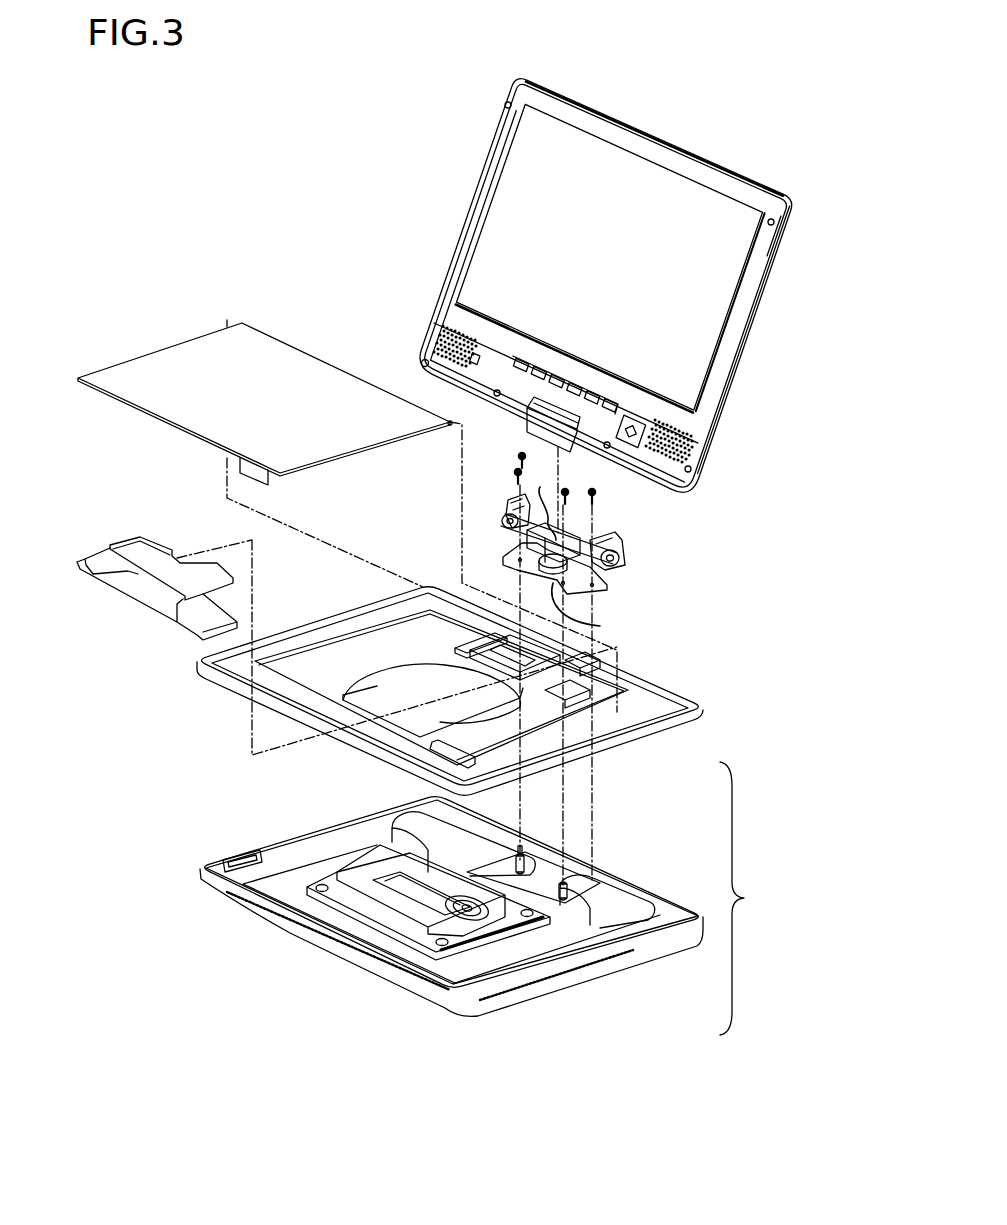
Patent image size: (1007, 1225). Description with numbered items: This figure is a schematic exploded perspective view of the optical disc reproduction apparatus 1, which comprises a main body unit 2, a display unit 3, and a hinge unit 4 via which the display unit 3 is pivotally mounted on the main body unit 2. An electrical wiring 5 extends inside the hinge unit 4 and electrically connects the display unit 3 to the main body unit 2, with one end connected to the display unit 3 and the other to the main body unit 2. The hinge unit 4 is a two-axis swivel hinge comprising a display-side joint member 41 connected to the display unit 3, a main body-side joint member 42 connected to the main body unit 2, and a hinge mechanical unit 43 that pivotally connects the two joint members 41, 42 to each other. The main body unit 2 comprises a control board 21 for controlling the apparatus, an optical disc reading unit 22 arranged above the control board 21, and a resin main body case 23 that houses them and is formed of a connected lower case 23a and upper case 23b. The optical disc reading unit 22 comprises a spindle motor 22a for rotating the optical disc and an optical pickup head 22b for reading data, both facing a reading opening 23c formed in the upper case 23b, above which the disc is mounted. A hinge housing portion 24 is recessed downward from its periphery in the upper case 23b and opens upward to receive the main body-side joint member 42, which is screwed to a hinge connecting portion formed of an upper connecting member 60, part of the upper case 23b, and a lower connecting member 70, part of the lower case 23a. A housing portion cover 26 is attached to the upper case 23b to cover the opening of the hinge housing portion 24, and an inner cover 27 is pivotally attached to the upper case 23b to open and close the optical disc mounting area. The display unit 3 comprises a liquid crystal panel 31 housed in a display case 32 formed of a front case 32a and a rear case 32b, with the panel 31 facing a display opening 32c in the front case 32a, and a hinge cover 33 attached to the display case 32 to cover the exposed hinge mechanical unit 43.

The optical disc reproduction apparatus 1 is at (298, 66).
The main body unit 2 is at (751, 905).
The display unit 3 is at (678, 143).
The hinge unit 4 is at (615, 590).
The electrical wiring 5 is at (540, 488).
The control board 21 is at (487, 971).
The optical disc reading unit 22 is at (380, 893).
The spindle motor 22a is at (490, 910).
The optical pickup head 22b is at (400, 878).
The main body case 23 is at (458, 794).
The lower case 23a is at (620, 982).
The upper case 23b is at (619, 750).
The reading opening 23c is at (408, 688).
The hinge housing portion 24 is at (468, 675).
The housing portion cover 26 is at (157, 553).
The inner cover 27 is at (202, 362).
The liquid crystal panel 31 is at (525, 202).
The display case 32 is at (797, 203).
The front case 32a is at (765, 228).
The rear case 32b is at (787, 218).
The display opening 32c is at (733, 217).
The hinge cover 33 is at (545, 427).
The display-side joint member 41 is at (508, 508).
The main body-side joint member 42 is at (532, 558).
The hinge mechanical unit 43 is at (574, 534).
The upper connecting member 60 is at (503, 640).
The lower connecting member 70 is at (542, 880).